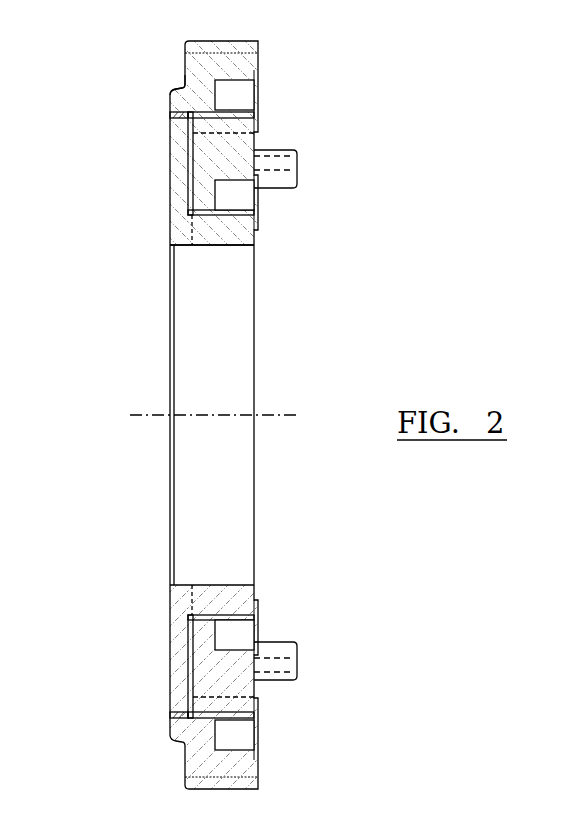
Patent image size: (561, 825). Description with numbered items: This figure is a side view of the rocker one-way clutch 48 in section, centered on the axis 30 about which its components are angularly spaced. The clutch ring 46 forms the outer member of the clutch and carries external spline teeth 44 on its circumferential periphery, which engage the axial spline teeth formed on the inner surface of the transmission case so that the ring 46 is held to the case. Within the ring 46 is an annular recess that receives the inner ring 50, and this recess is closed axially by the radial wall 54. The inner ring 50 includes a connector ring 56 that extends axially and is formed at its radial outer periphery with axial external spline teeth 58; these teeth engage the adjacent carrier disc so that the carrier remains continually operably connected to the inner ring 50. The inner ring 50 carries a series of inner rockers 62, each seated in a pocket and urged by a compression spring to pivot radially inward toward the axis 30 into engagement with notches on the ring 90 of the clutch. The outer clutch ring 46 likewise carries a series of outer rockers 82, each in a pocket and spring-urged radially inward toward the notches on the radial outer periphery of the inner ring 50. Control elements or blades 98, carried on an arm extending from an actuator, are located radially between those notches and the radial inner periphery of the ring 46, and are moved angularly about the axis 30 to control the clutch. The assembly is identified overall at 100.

The axis 30 is at (280, 413).
The external spline teeth 44 is at (188, 44).
The ring 46 is at (183, 91).
The rocker one-way clutch 48 is at (100, 83).
The inner ring 50 is at (196, 165).
The radial wall 54 is at (178, 190).
The connector ring 56 is at (290, 183).
The axial external spline teeth 58 is at (280, 148).
The inner rockers 62 is at (245, 198).
The outer rockers 82 is at (238, 95).
The ring 90 is at (225, 243).
The control elements or blades 98 is at (175, 126).
The assembly 100 is at (430, 819).